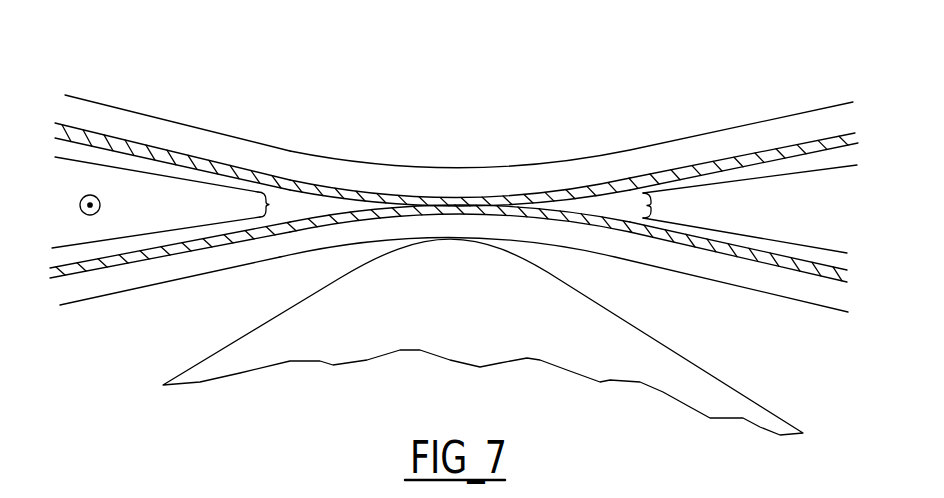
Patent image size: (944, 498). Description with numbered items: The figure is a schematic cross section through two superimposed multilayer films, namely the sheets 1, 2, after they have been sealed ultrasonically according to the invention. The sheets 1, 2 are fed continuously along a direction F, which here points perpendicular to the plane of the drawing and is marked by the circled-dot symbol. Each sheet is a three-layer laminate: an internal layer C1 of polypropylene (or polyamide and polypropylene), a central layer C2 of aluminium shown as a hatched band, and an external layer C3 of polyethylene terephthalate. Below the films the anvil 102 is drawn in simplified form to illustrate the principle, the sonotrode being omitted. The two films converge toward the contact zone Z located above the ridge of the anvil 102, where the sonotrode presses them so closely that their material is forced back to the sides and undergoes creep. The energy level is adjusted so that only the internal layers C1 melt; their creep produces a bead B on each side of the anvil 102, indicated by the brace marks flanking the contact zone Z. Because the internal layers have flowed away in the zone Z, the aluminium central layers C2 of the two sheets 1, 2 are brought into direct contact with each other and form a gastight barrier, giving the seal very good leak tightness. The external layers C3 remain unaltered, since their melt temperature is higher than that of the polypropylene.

The sheet 1 is at (775, 95).
The sheet 2 is at (798, 237).
The bead B is at (277, 202).
The contact zone Z is at (462, 155).
The feed direction F is at (102, 206).
The internal layer C1 is at (78, 148).
The central layer C2 is at (133, 150).
The external layer C3 is at (180, 135).
The anvil 102 is at (667, 366).